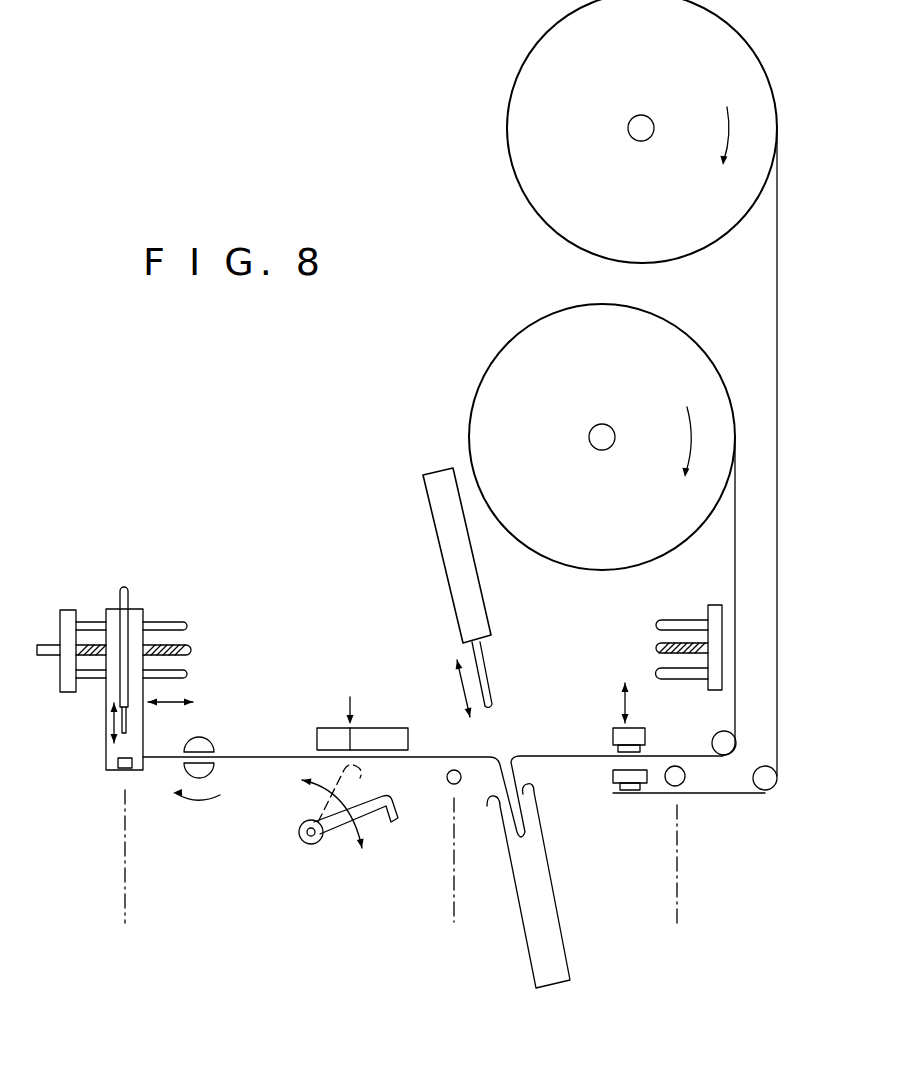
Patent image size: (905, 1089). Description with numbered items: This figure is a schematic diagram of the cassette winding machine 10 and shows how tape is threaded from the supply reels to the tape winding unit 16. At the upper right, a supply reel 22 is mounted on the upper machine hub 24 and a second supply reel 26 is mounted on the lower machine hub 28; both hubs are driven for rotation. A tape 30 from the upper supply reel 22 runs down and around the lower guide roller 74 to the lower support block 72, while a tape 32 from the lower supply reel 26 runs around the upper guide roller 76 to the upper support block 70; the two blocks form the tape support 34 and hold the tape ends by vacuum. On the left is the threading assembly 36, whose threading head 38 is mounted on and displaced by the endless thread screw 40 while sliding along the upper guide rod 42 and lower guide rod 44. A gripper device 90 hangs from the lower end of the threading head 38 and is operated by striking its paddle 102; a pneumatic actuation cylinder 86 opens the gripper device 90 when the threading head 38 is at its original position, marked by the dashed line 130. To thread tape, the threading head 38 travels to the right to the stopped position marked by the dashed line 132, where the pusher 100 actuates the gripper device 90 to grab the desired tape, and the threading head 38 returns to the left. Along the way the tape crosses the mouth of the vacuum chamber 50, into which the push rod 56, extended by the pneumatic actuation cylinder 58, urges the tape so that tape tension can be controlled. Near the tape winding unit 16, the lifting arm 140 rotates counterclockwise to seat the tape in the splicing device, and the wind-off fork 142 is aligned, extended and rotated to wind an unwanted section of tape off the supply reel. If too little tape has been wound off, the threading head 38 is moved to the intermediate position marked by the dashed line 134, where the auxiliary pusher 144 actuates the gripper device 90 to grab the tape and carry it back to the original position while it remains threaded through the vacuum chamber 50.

The cassette winding machine 10 is at (298, 462).
The tape winding unit 16 is at (362, 711).
The supply reel 22 is at (612, 48).
The upper machine hub 24 is at (646, 116).
The supply reel 26 is at (600, 355).
The lower machine hub 28 is at (597, 447).
The tape 30 is at (777, 294).
The tape 32 is at (735, 566).
The tape support 34 is at (638, 806).
The threading assembly 36 is at (144, 692).
The threading head 38 is at (113, 755).
The endless thread screw 40 is at (190, 651).
The upper guide rod 42 is at (173, 627).
The lower guide rod 44 is at (190, 675).
The vacuum chamber 50 is at (550, 936).
The push rod 56 is at (483, 672).
The pneumatic actuation cylinder 58 is at (443, 525).
The upper support block 70 is at (618, 736).
The lower support block 72 is at (613, 778).
The lower guide roller 74 is at (765, 792).
The upper guide roller 76 is at (722, 738).
The pneumatic actuation cylinder 86 is at (118, 598).
The gripper device 90 is at (118, 778).
The pusher 100 is at (680, 784).
The paddle 102 is at (128, 765).
The dashed line 130 is at (125, 843).
The dashed line 132 is at (677, 868).
The dashed line 134 is at (454, 873).
The lifting arm 140 is at (336, 826).
The wind-off fork 142 is at (200, 740).
The auxiliary pusher 144 is at (455, 770).